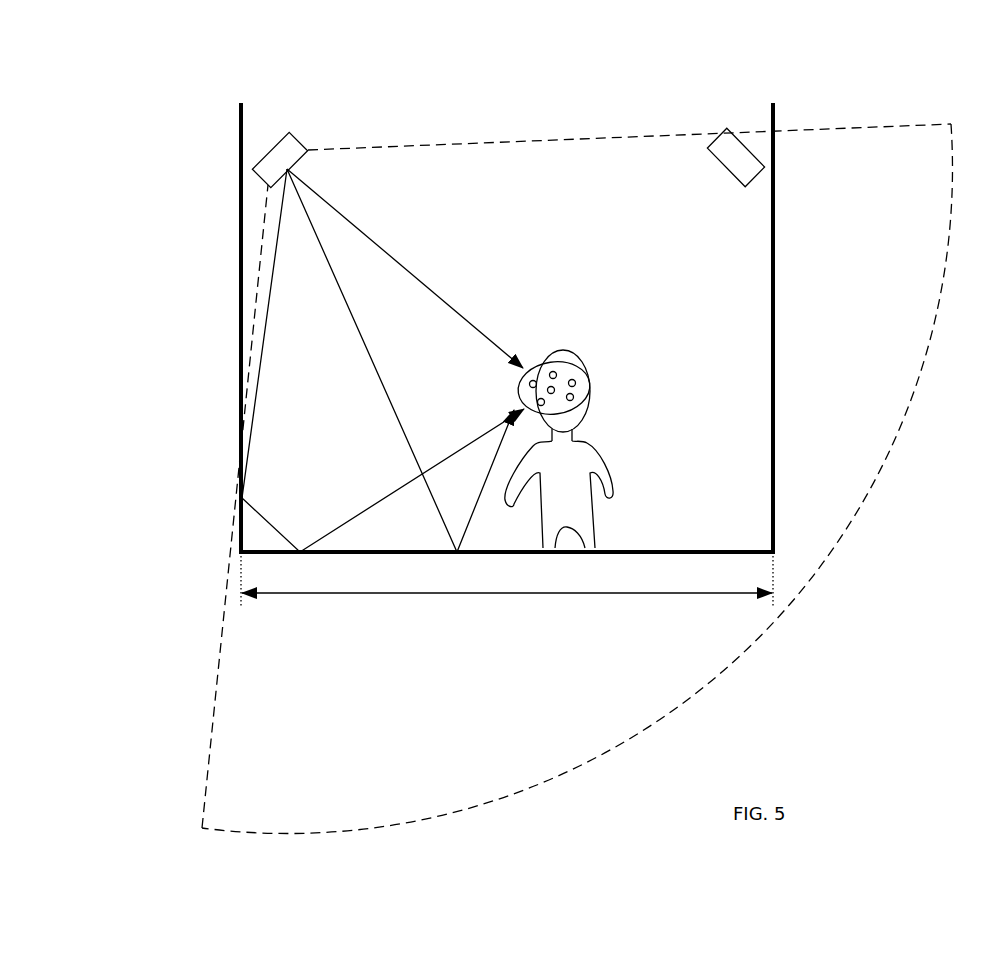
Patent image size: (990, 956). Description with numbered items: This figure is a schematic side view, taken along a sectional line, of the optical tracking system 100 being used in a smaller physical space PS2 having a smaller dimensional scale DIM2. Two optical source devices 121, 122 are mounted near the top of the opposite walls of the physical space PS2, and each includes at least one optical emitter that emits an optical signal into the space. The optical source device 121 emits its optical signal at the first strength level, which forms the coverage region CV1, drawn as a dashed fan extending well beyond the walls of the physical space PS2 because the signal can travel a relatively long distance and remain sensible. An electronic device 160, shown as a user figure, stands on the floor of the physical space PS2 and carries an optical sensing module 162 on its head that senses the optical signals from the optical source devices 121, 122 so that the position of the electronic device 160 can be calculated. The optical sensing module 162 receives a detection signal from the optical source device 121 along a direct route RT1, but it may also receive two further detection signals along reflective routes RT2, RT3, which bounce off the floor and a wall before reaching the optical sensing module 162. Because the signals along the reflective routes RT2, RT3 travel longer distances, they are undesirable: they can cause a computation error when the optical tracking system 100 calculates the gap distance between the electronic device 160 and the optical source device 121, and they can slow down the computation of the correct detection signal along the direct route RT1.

The optical tracking system 100 is at (135, 69).
The optical source device 121 is at (298, 132).
The optical source device 122 is at (752, 152).
The coverage region CV1 is at (263, 248).
The direct route RT1 is at (414, 277).
The reflective route RT2 is at (395, 413).
The reflective route RT3 is at (364, 508).
The electronic device 160 is at (578, 361).
The optical sensing module 162 is at (551, 390).
The physical space PS2 is at (666, 551).
The dimensional scale DIM2 is at (546, 597).